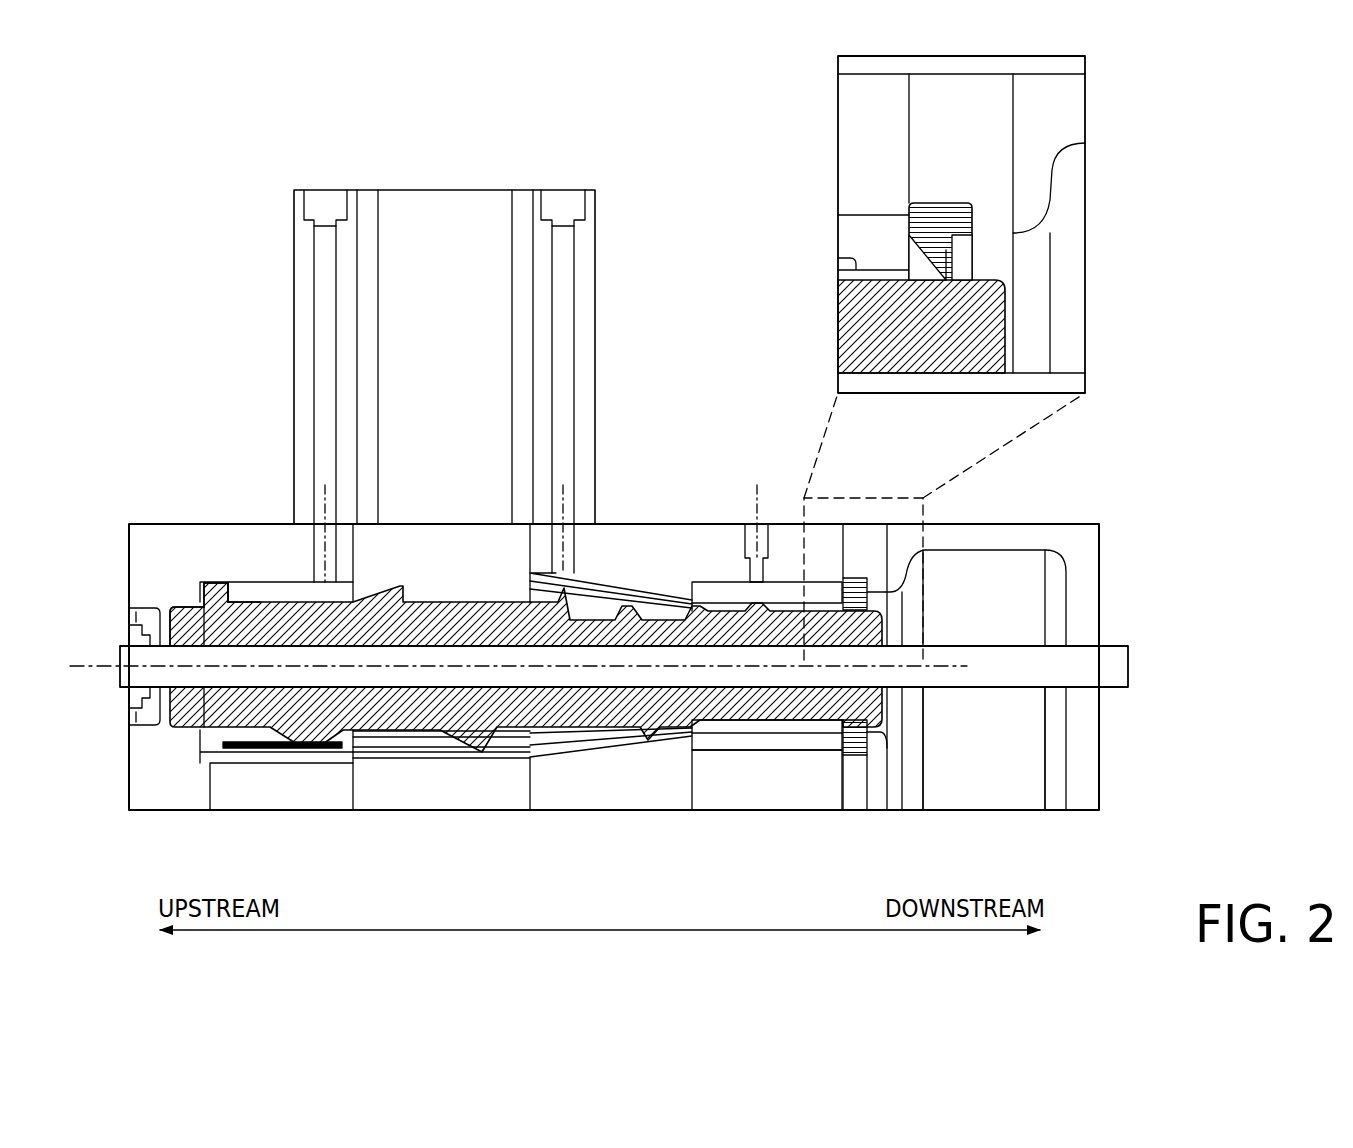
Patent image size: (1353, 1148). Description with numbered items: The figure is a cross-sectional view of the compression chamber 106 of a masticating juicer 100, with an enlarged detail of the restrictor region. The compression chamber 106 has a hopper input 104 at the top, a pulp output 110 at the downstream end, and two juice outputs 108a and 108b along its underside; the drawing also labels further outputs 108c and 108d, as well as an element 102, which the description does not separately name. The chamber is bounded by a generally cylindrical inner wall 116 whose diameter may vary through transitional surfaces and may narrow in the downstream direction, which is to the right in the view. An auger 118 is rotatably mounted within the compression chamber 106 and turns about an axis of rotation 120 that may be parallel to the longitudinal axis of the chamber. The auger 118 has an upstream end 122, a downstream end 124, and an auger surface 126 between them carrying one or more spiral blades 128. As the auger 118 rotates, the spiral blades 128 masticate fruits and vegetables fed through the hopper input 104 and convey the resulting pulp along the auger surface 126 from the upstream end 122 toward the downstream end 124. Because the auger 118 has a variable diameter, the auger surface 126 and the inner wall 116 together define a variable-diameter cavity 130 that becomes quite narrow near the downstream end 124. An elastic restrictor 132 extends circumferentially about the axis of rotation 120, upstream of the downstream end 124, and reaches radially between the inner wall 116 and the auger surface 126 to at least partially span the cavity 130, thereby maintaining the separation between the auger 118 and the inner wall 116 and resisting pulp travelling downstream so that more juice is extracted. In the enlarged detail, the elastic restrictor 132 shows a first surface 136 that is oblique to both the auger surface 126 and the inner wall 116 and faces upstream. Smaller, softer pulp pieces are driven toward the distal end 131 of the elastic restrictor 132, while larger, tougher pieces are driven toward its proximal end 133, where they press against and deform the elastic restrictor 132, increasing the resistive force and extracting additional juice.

The masticating juicer 100 is at (210, 128).
The housing block 102 is at (294, 328).
The hopper input 104 is at (461, 192).
The compression chamber 106 is at (635, 522).
The juice output 108a is at (272, 753).
The juice output 108b is at (440, 773).
The third coil section 108c is at (796, 756).
The fourth coil section 108d is at (863, 781).
The pulp output 110 is at (1008, 776).
The inner wall 116 is at (606, 598).
The auger 118 is at (255, 610).
The axis of rotation 120 is at (110, 658).
The upstream end 122 is at (166, 726).
The downstream end 124 is at (885, 704).
The auger surface 126 is at (480, 612).
The spiral blades 128 is at (396, 586).
The variable-diameter cavity 130 is at (734, 602).
The distal end 131 is at (958, 272).
The elastic restrictor 132 is at (873, 575).
The proximal end 133 is at (958, 243).
The first surface 136 is at (926, 265).